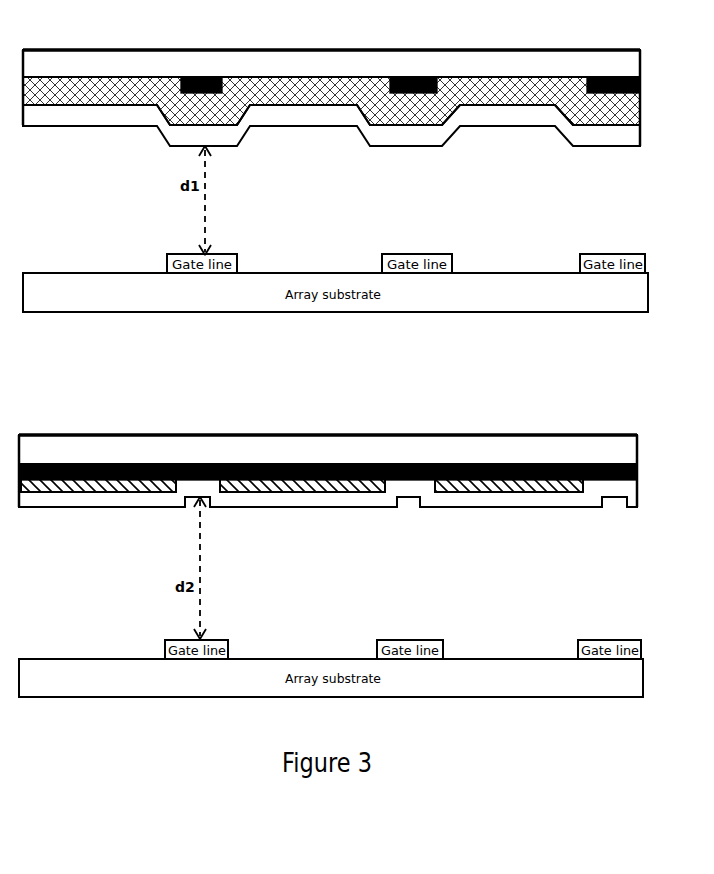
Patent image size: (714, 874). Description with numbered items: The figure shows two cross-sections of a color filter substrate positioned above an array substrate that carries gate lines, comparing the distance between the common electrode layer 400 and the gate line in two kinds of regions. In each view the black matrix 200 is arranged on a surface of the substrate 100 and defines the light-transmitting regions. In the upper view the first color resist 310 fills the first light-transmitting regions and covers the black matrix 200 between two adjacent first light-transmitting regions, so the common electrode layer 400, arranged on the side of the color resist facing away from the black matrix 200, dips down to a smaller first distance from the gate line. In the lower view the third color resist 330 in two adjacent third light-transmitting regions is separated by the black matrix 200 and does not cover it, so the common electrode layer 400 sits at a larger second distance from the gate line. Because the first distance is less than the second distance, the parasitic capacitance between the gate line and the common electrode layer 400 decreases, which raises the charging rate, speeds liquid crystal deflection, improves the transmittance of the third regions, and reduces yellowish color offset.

The substrate 100 is at (465, 67).
The black matrix 200 is at (203, 77).
The first color resist 310 is at (308, 85).
The third color resist 330 is at (298, 473).
The common electrode layer 400 is at (125, 113).